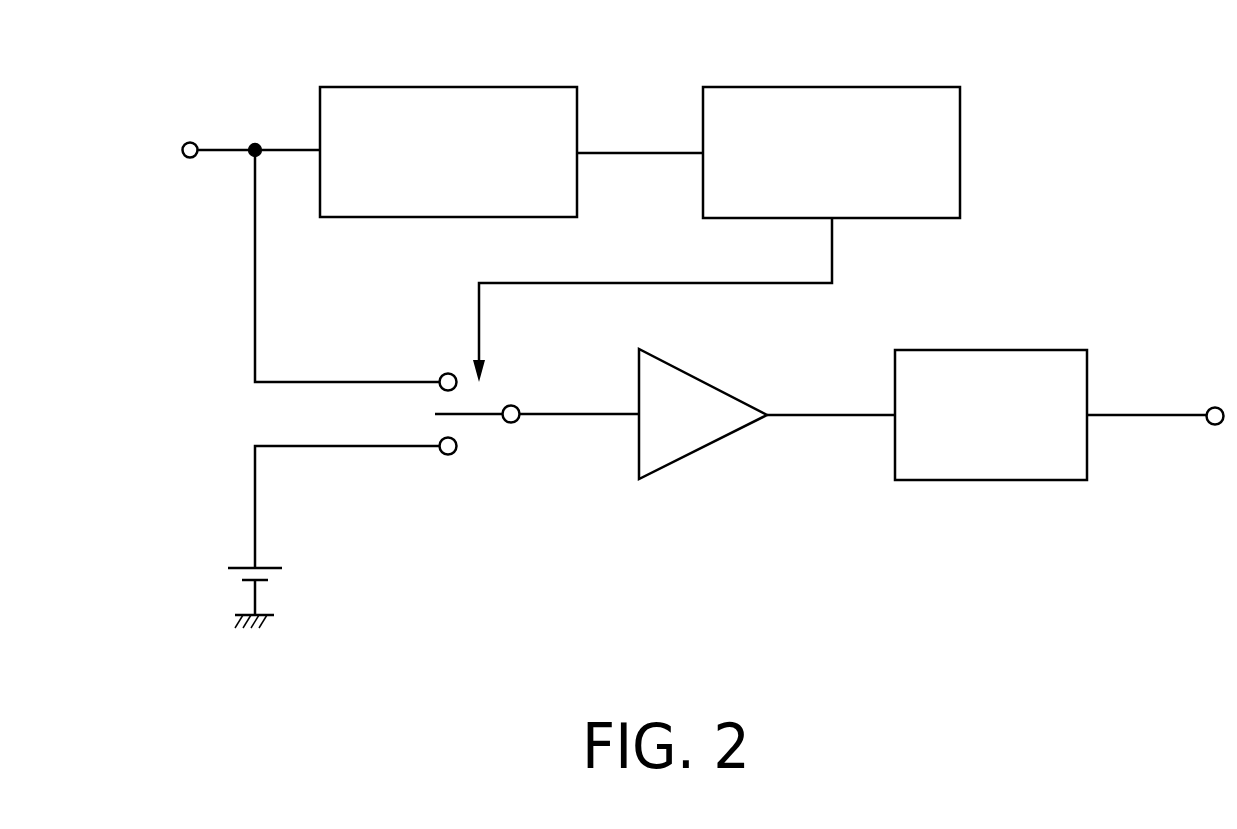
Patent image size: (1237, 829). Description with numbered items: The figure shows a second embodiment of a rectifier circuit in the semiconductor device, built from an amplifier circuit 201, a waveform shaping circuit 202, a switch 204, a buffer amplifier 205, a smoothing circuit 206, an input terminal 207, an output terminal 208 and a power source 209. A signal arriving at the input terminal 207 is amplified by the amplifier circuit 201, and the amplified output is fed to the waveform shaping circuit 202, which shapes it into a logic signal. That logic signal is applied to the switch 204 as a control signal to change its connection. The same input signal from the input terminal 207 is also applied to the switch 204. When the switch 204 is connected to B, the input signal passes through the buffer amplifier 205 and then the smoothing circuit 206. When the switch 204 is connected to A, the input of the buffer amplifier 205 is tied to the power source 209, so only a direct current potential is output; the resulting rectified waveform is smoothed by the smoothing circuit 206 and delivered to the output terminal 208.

The amplifier circuit 201 is at (419, 152).
The waveform shaping circuit 202 is at (716, 234).
The switch 204 is at (478, 457).
The buffer amplifier 205 is at (702, 458).
The smoothing circuit 206 is at (1050, 415).
The input terminal 207 is at (188, 127).
The output terminal 208 is at (1210, 437).
The power source 209 is at (226, 550).